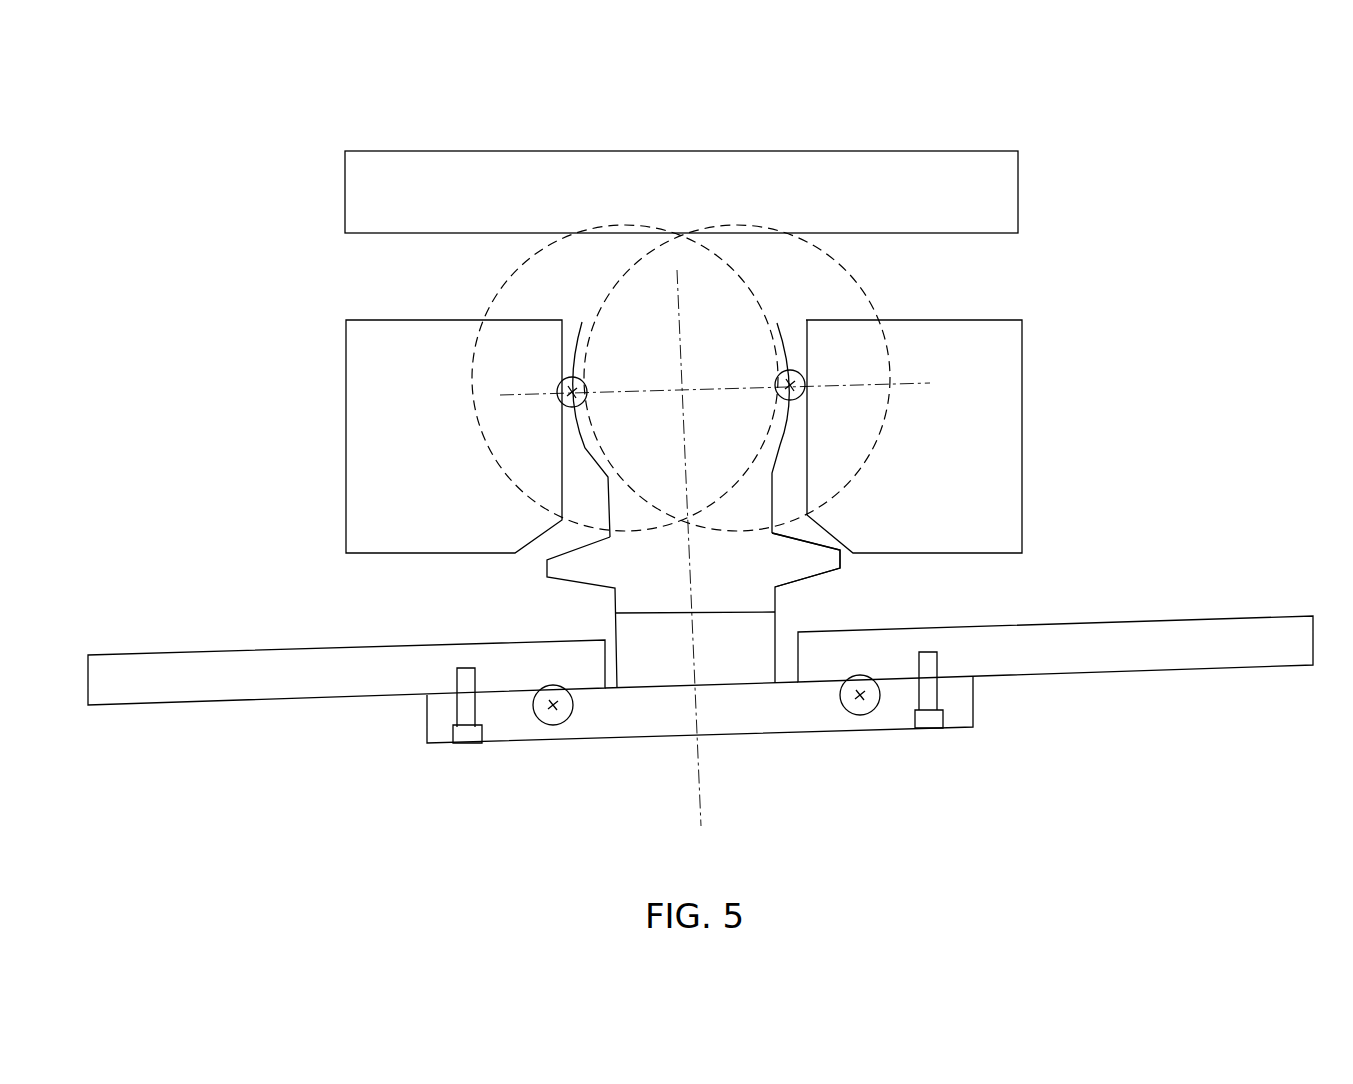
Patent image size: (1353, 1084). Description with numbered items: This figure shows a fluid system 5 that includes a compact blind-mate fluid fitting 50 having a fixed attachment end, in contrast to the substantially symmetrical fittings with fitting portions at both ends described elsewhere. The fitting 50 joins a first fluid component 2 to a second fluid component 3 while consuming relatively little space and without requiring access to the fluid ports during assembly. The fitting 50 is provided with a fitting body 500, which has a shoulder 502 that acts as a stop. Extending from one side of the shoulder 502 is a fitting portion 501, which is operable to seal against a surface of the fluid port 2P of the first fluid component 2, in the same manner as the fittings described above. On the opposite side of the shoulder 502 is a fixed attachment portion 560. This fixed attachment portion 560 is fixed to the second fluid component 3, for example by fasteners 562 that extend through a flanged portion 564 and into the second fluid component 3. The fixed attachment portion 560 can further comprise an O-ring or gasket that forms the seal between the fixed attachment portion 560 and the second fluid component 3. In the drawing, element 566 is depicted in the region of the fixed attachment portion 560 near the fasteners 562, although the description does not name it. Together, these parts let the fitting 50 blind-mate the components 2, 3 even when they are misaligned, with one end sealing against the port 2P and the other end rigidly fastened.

The fluid system 5 is at (308, 190).
The first fluid component 2 is at (970, 452).
The fluid port 2P is at (807, 333).
The compact blind-mate fluid fitting 50 is at (715, 370).
The fitting portion 501 is at (612, 357).
The fitting body 500 is at (598, 585).
The shoulder 502 is at (825, 571).
The second fluid component 3 is at (1088, 650).
The fixed attachment portion 560 is at (527, 733).
The fasteners 562 is at (927, 715).
The flanged portion 564 is at (440, 733).
The rollers 566 is at (848, 703).